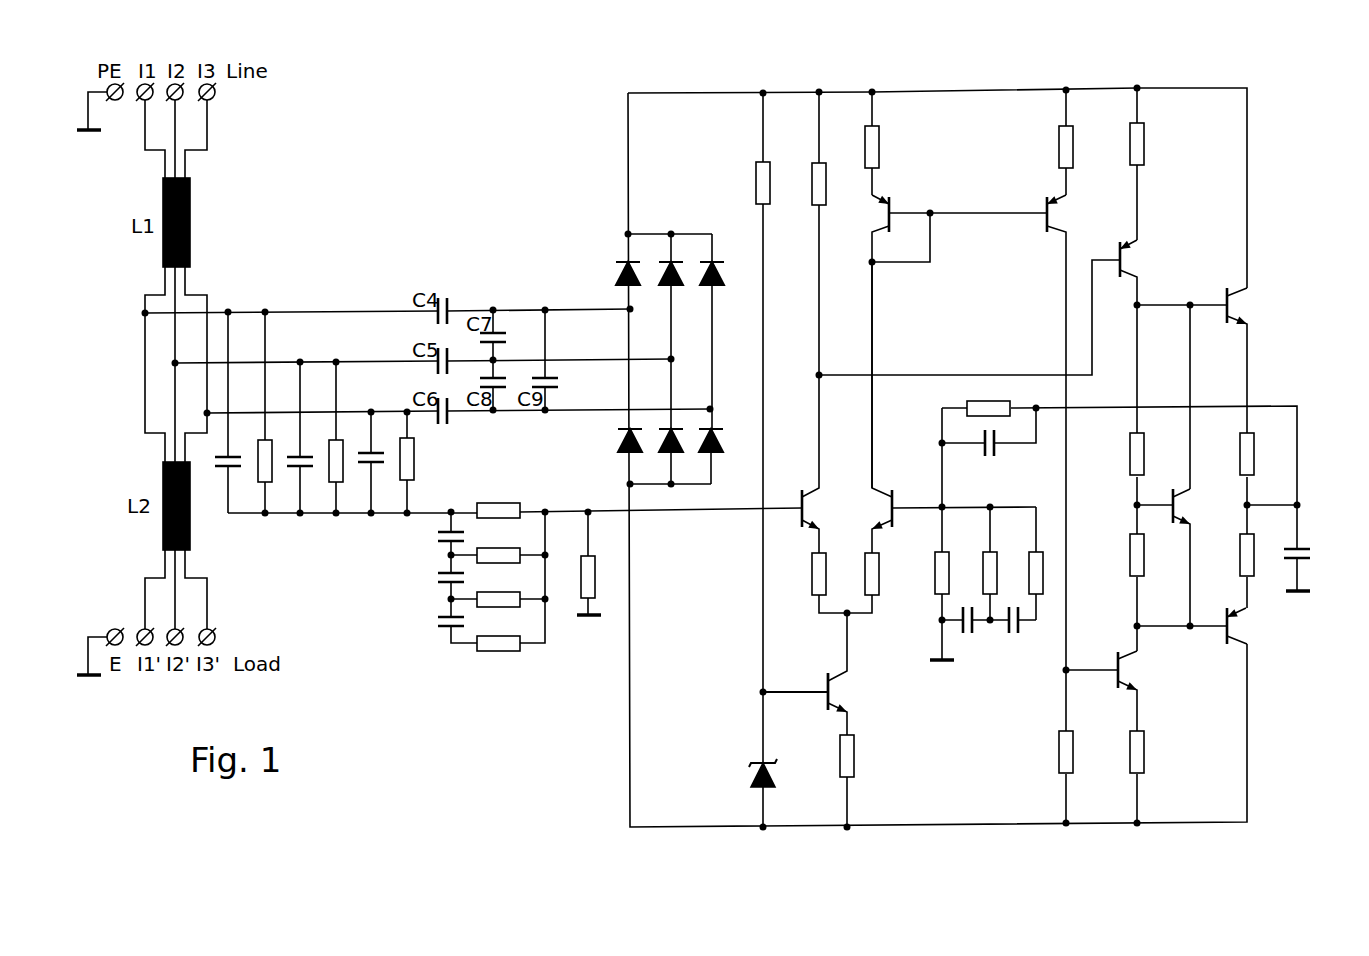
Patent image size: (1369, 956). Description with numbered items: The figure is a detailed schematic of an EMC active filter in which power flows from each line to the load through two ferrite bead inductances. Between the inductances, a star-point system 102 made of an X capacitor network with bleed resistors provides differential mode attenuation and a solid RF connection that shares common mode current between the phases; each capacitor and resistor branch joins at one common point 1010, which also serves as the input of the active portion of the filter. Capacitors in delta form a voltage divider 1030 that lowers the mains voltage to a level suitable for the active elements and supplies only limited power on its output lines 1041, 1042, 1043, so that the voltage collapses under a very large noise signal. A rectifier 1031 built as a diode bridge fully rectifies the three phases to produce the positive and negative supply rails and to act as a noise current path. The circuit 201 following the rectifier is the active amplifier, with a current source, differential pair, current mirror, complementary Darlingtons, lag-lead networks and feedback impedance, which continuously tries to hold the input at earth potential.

The star-point system 102 is at (308, 553).
The circuit 201 is at (600, 748).
The common point 1010 is at (428, 510).
The voltage divider 1030 is at (492, 252).
The rectifier 1031 is at (612, 212).
The output line 1041 is at (628, 308).
The output line 1042 is at (623, 358).
The output line 1043 is at (625, 410).